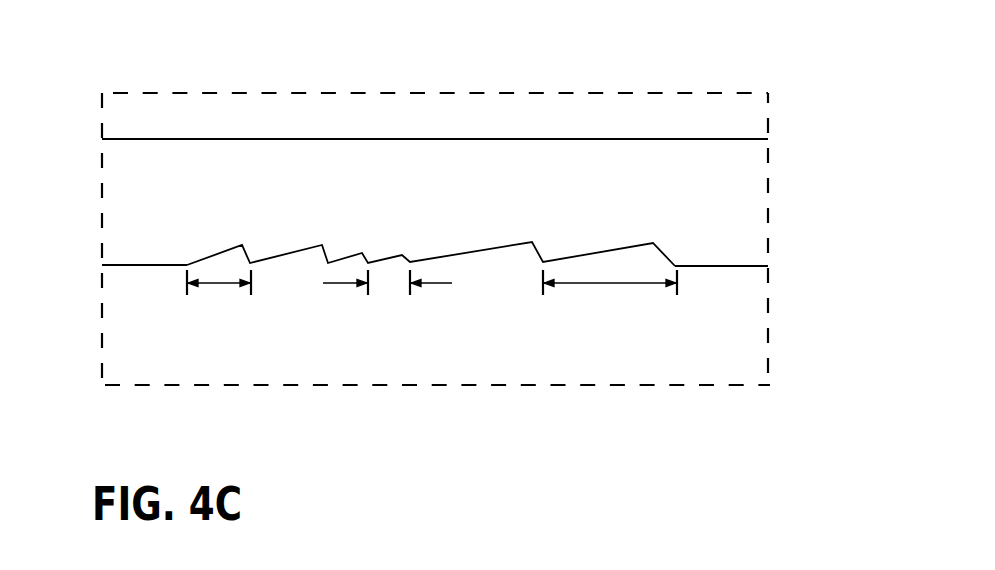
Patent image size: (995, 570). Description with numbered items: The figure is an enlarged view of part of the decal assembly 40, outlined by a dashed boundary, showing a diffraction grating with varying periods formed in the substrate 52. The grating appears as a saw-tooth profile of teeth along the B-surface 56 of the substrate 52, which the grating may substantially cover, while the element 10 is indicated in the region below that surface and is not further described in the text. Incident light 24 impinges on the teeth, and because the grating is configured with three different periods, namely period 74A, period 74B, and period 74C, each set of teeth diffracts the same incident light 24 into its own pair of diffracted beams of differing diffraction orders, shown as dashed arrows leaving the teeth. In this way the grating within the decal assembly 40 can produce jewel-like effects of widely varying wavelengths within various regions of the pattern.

The substrate 10 is at (138, 308).
The incident light 24 is at (190, 256).
The decal assembly 40 is at (592, 125).
The substrate 52 is at (120, 158).
The B-surface 56 is at (127, 263).
The period 74A is at (215, 285).
The period 74B is at (338, 285).
The period 74C is at (592, 285).